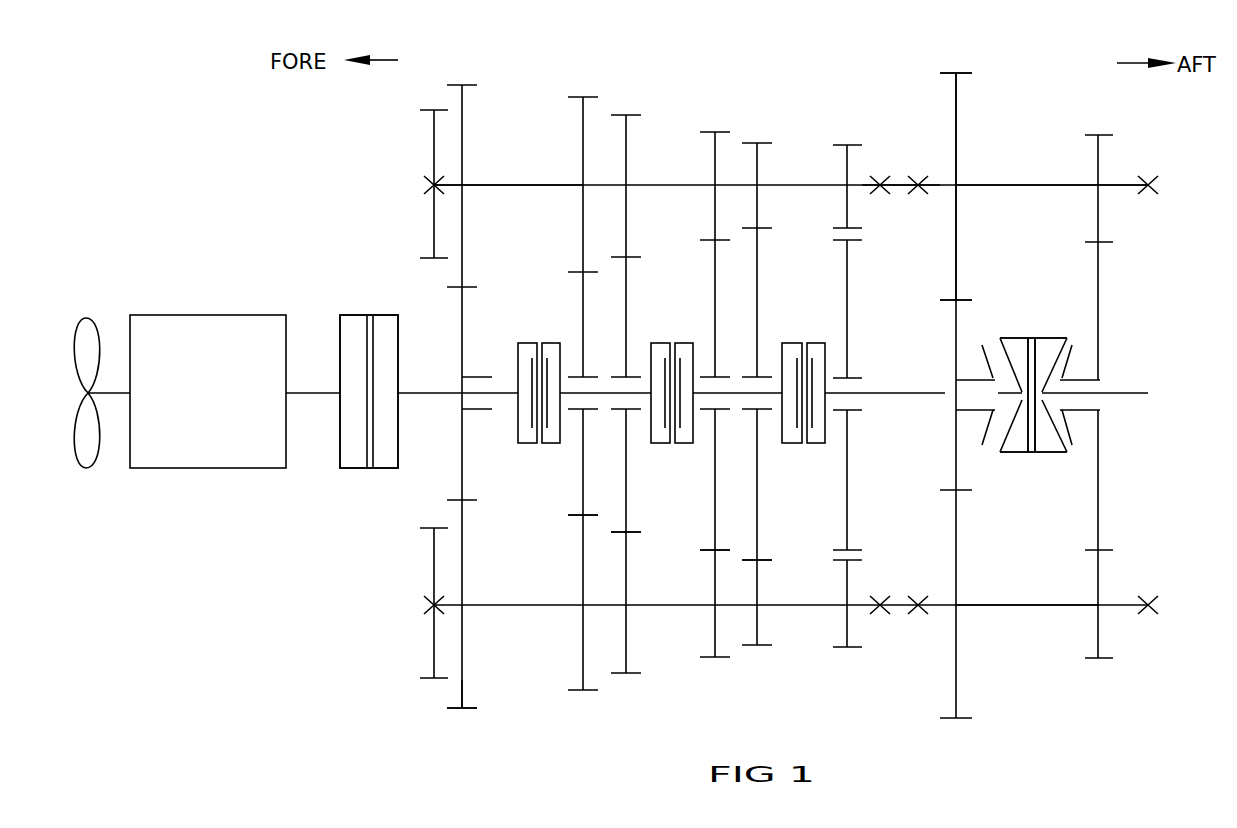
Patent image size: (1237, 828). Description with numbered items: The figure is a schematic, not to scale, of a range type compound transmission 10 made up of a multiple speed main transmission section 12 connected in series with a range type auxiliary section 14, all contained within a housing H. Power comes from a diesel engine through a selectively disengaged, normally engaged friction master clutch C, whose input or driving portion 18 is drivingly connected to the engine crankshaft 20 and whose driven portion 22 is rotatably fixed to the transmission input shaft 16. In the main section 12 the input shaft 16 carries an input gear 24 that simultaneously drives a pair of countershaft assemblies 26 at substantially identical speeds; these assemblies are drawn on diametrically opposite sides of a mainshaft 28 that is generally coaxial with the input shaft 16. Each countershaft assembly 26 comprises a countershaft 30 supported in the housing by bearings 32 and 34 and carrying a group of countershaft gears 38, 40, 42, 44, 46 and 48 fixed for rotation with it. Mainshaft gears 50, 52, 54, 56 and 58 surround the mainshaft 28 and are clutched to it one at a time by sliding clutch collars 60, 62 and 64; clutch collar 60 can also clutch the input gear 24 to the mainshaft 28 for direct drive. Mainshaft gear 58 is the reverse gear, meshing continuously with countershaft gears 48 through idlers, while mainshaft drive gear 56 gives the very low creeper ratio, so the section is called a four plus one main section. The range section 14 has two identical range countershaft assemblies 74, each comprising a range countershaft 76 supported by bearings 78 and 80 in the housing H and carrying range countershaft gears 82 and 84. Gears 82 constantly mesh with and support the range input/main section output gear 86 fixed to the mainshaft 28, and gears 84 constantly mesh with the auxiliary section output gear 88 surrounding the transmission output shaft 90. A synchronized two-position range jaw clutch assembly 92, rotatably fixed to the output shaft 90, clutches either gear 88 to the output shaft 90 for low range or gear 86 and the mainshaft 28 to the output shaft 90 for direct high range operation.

The compound transmission 10 is at (903, 170).
The main transmission section 12 is at (665, 152).
The range type auxiliary section 14 is at (1015, 130).
The input shaft 16 is at (443, 393).
The input or driving portion 18 is at (350, 468).
The engine crankshaft 20 is at (312, 393).
The driven portion 22 is at (383, 468).
The input gear 24 is at (464, 328).
The countershaft assemblies 26 is at (502, 184).
The mainshaft 28 is at (943, 395).
The countershaft 30 is at (553, 187).
The bearing 32 is at (428, 600).
The bearing 34 is at (880, 612).
The countershaft gear 38 is at (455, 692).
The countershaft gear 40 is at (578, 655).
The countershaft gear 42 is at (628, 650).
The countershaft gear 44 is at (712, 616).
The countershaft gear 46 is at (760, 637).
The countershaft gear 48 is at (847, 640).
The mainshaft gear 50 is at (582, 504).
The mainshaft gear 52 is at (627, 480).
The mainshaft gear 54 is at (714, 529).
The mainshaft drive gear 56 is at (758, 485).
The reverse gear 58 is at (847, 533).
The sliding clutch collar 60 is at (518, 425).
The sliding clutch collar 62 is at (698, 343).
The sliding clutch collar 64 is at (783, 343).
The range countershaft assemblies 74 is at (1017, 186).
The range countershaft 76 is at (1087, 190).
The bearing 78 is at (925, 190).
The bearing 80 is at (1150, 190).
The range countershaft gear 82 is at (957, 207).
The range countershaft gear 84 is at (1100, 160).
The range input/main section output gear 86 is at (955, 351).
The auxiliary section output gear 88 is at (1097, 316).
The transmission output shaft 90 is at (1120, 391).
The range jaw clutch assembly 92 is at (1038, 455).
The housing H is at (434, 128).
The friction master clutch C is at (368, 317).